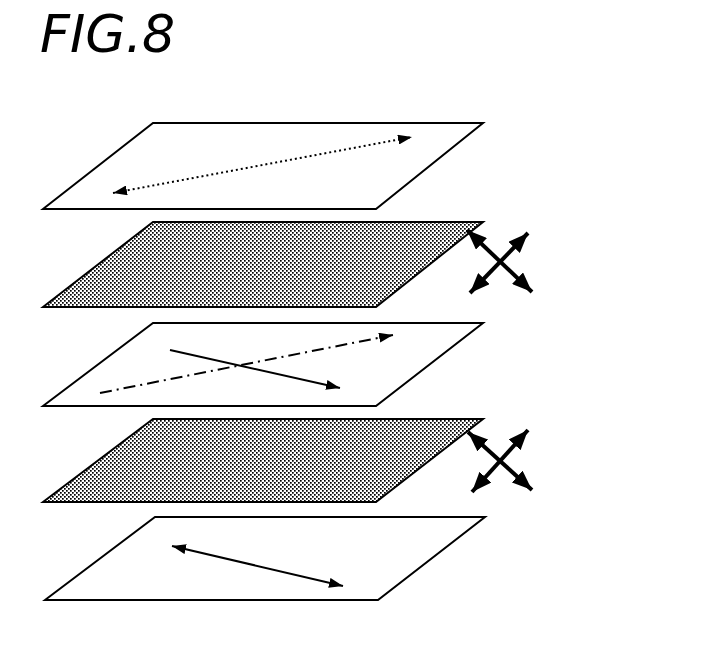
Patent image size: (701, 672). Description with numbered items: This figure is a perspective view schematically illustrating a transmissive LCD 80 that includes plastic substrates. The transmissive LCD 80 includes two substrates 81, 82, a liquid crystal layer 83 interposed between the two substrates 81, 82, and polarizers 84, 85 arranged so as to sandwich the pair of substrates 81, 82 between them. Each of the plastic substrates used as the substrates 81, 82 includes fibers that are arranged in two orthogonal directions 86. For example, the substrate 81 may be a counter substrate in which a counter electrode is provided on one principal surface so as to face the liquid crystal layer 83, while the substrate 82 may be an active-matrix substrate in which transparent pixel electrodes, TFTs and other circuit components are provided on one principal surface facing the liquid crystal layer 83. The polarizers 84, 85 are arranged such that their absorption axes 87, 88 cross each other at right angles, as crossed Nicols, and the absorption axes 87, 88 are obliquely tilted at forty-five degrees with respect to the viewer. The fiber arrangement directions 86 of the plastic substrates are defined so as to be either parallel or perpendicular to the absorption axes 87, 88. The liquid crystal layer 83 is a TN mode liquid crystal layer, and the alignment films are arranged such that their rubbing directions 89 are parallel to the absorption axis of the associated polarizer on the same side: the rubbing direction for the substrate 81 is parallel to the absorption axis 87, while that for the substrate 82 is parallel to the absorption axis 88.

The transmissive LCD 80 is at (542, 129).
The substrate 81 is at (83, 280).
The substrate 82 is at (83, 472).
The liquid crystal layer 83 is at (83, 378).
The polarizer 84 is at (102, 160).
The polarizer 85 is at (88, 566).
The fiber arrangement directions 86 is at (524, 361).
The absorption axis 87 is at (347, 142).
The absorption axis 88 is at (307, 583).
The rubbing directions of liquid crystal cell 89 is at (337, 380).